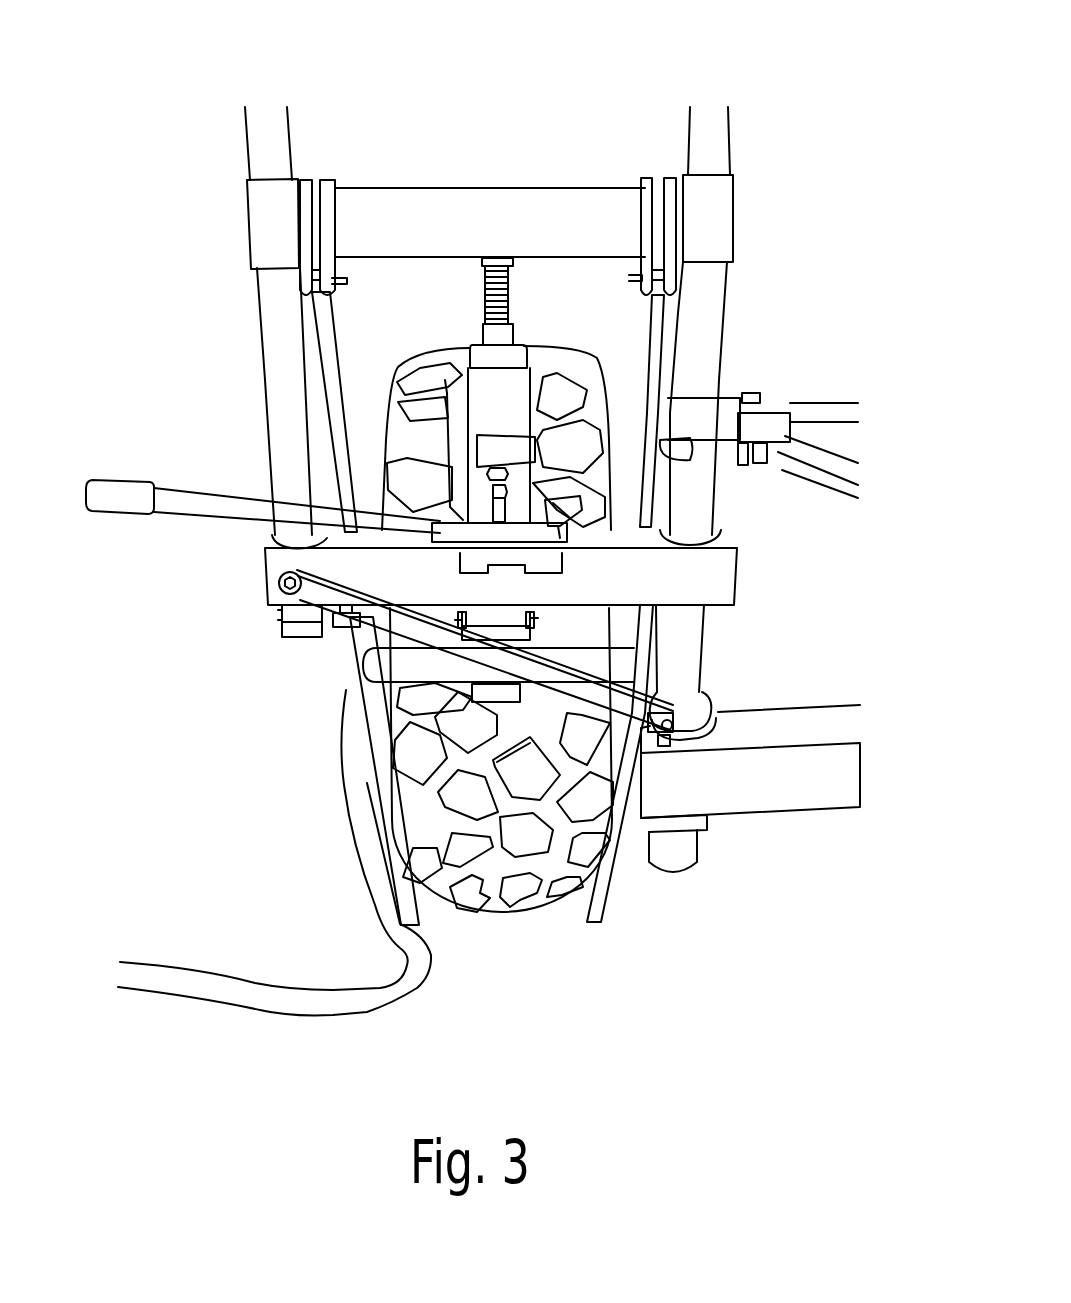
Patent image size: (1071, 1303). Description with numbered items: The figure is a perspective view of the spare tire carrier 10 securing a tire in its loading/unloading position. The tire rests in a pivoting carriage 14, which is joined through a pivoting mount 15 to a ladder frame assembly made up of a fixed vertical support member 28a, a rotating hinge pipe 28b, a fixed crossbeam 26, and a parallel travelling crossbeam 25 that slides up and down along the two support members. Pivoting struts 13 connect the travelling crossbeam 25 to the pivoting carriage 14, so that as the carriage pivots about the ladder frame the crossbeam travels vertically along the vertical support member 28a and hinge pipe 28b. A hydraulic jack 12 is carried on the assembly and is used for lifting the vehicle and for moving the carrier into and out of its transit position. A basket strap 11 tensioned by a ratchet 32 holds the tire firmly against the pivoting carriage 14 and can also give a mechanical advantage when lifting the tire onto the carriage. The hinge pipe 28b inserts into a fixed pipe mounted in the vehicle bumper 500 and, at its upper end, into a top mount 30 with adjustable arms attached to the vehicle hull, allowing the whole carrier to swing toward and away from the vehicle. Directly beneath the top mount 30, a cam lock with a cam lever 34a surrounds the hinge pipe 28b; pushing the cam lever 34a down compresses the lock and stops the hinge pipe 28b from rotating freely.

The spare tire carrier 10 is at (200, 835).
The basket strap 11 is at (580, 357).
The jack 12 is at (485, 418).
The pivoting strut 13 is at (328, 333).
The pivoting carriage 14 is at (350, 693).
The pivoting mount 15 is at (347, 624).
The travelling crossbeam 25 is at (550, 217).
The fixed crossbeam 26 is at (690, 585).
The vertical support member 28a is at (283, 310).
The hinge pipe 28b is at (705, 278).
The top mount 30 is at (755, 374).
The ratchet 32 is at (488, 628).
The cam lever 34a is at (690, 455).
The vehicle bumper 500 is at (739, 786).